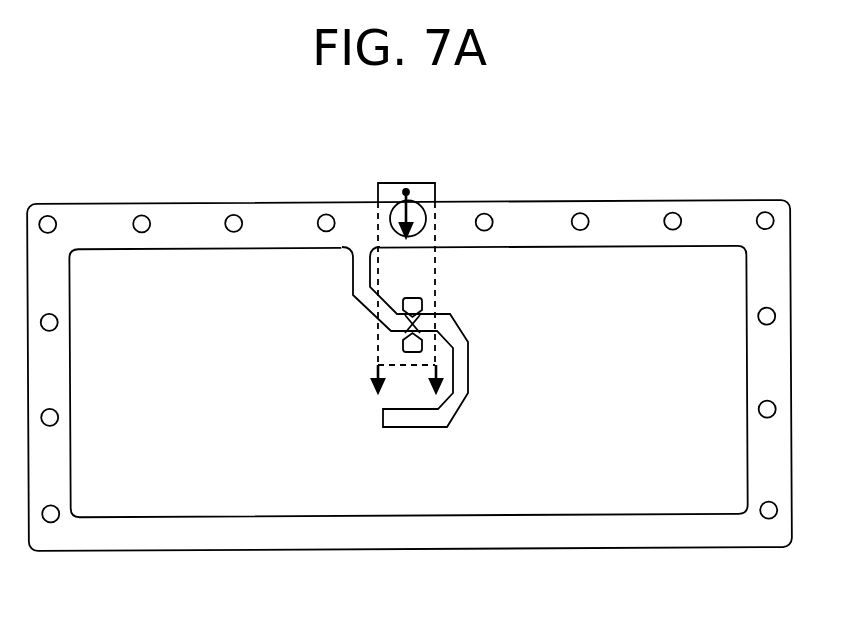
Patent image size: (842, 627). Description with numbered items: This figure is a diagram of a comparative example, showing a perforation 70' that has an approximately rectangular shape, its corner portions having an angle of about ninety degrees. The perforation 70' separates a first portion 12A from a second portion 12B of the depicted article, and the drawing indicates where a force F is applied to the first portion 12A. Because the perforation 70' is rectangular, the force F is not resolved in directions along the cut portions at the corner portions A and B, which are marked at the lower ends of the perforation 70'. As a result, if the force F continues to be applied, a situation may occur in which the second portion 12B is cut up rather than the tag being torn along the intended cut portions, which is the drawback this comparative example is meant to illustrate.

The first portion 12A is at (413, 267).
The second portion 12B is at (655, 267).
The perforation 70' is at (455, 337).
The force F is at (403, 215).
The corner portion A is at (377, 365).
The corner portion B is at (437, 365).